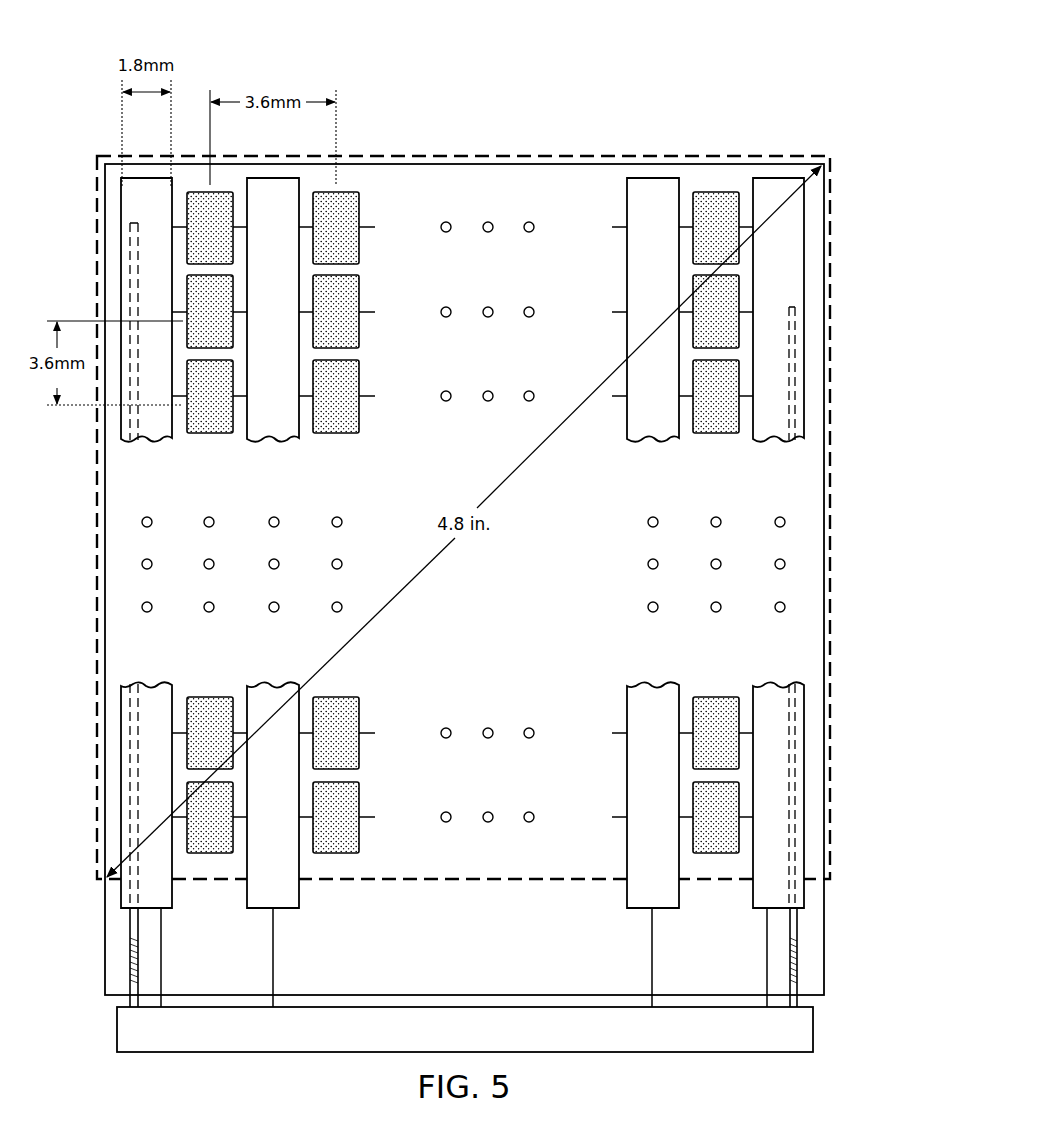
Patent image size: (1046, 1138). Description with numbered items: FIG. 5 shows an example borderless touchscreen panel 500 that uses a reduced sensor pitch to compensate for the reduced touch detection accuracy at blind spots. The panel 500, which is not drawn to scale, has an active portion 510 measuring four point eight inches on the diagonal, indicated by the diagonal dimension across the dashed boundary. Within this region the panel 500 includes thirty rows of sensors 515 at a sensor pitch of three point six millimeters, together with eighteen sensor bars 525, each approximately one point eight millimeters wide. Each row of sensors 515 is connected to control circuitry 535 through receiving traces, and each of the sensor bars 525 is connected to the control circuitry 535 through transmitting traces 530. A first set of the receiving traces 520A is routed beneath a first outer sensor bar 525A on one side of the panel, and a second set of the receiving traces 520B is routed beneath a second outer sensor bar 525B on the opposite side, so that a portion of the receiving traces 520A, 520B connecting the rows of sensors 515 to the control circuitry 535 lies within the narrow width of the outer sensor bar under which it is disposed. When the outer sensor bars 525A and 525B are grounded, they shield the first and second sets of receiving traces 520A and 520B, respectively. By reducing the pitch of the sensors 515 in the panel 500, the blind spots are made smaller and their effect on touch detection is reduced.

The touchscreen panel 500 is at (558, 72).
The active portion 510 is at (503, 883).
The sensors 515 is at (716, 192).
The first set of receiving traces 520A is at (129, 921).
The second set of receiving traces 520B is at (799, 925).
The sensor bars 525 is at (654, 178).
The first outer sensor bar 525A is at (121, 208).
The second outer sensor bar 525B is at (779, 178).
The transmitting traces 530 is at (162, 958).
The control circuitry 535 is at (813, 1025).